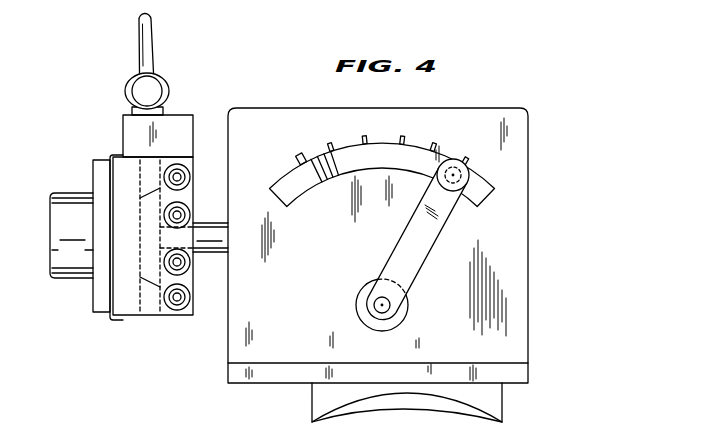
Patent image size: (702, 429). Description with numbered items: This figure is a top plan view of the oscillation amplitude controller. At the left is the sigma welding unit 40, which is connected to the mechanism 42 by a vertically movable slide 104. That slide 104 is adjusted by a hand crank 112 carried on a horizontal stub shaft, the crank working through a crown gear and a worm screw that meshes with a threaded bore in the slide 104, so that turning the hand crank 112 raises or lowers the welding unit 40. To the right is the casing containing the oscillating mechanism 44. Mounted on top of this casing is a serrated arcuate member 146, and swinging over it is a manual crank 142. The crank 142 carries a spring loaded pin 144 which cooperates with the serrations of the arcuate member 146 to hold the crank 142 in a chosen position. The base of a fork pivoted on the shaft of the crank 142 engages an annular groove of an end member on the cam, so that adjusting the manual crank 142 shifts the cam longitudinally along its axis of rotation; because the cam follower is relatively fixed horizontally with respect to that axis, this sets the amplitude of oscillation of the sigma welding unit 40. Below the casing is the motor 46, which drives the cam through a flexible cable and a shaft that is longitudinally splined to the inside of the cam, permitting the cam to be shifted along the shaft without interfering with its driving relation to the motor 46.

The sigma welding unit 40 is at (97, 172).
The vertically movable slide 104 is at (122, 272).
The hand crank 112 is at (157, 37).
The oscillating mechanism 44 is at (529, 311).
The motor 46 is at (478, 419).
The manual crank 142 is at (431, 255).
The spring loaded pin 144 is at (458, 177).
The serrated arcuate member 146 is at (348, 144).
The mechanism 42 is at (413, 427).